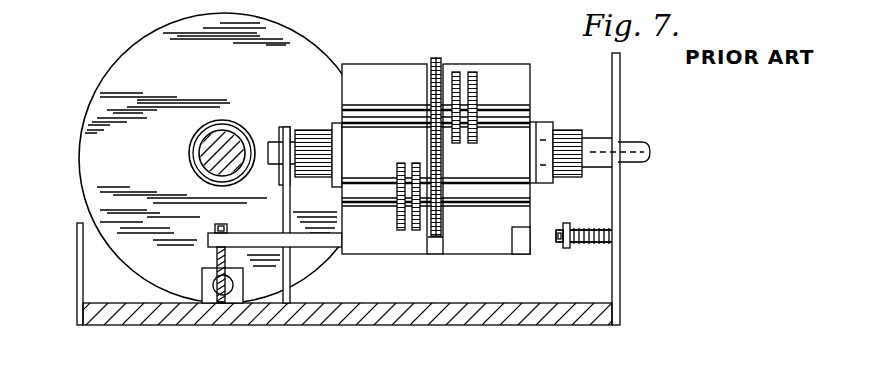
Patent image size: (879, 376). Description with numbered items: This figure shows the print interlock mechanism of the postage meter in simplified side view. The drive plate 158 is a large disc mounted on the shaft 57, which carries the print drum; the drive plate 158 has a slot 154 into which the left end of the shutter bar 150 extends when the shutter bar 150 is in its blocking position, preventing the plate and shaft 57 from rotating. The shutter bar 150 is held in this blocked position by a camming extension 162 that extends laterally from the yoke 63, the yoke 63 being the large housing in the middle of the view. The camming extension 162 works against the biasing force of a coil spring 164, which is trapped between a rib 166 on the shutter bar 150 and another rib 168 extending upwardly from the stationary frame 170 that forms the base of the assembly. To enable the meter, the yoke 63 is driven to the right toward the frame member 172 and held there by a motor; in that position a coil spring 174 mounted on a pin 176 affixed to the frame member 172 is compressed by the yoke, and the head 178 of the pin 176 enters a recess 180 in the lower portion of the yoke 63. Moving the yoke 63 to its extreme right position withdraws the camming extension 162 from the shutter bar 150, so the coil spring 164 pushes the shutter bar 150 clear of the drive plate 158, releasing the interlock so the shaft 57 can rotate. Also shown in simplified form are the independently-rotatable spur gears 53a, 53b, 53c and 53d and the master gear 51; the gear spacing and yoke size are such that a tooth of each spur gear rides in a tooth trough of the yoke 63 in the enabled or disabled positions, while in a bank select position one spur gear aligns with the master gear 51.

The master gear 51 is at (439, 58).
The spur gear 53a is at (456, 72).
The spur gear 53b is at (478, 82).
The spur gear 53c is at (402, 232).
The spur gear 53d is at (418, 232).
The shaft 57 is at (206, 142).
The yoke 63 is at (368, 63).
The shutter bar 150 is at (228, 226).
The slot 154 is at (215, 231).
The drive plate 158 is at (266, 80).
The camming extension 162 is at (313, 243).
The coil spring 164 is at (202, 285).
The rib 166 is at (222, 303).
The rib 168 is at (203, 277).
The stationary frame 170 is at (386, 313).
The frame member 172 is at (620, 88).
The coil spring 174 is at (572, 225).
The pin 176 is at (598, 244).
The head 178 is at (557, 238).
The recess 180 is at (516, 242).